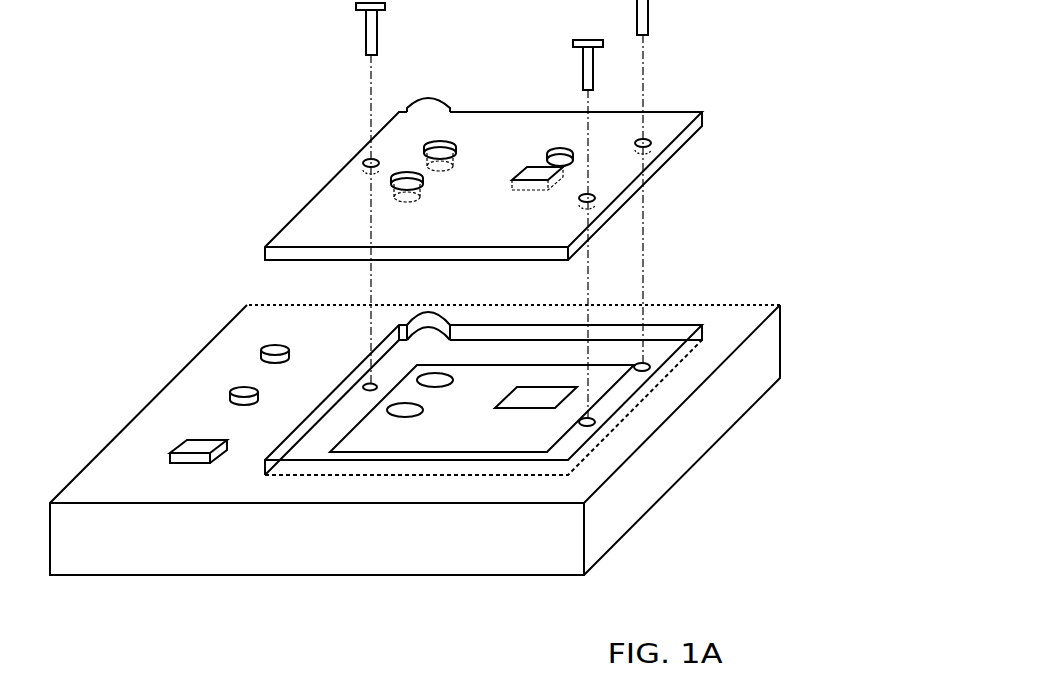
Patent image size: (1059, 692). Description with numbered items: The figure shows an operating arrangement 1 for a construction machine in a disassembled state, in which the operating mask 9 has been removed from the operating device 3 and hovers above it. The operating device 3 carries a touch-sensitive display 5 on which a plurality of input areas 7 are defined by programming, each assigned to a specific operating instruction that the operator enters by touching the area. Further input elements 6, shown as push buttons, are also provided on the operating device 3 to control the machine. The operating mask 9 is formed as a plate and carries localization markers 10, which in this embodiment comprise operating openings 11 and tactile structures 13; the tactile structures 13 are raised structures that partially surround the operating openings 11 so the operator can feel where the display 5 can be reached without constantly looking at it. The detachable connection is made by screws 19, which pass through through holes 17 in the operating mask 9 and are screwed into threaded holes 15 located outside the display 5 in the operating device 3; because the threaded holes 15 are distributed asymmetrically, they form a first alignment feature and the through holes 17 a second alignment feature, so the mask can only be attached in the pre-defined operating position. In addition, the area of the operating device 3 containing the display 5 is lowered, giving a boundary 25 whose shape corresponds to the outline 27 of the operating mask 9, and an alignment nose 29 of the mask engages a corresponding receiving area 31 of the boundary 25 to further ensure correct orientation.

The operating arrangement 1 is at (185, 218).
The operating device 3 is at (95, 430).
The touch-sensitive display 5 is at (483, 428).
The input elements 6 is at (197, 447).
The input areas 7 is at (440, 386).
The operating mask 9 is at (517, 83).
The localization markers 10 is at (390, 207).
The operating openings 11 is at (417, 197).
The tactile structures 13 is at (410, 177).
The threaded holes 15 is at (364, 390).
The through holes 17 is at (363, 160).
The screws 19 is at (378, 35).
The boundary 25 is at (477, 332).
The outline 27 is at (510, 259).
The alignment nose 29 is at (437, 100).
The receiving area 31 is at (412, 317).